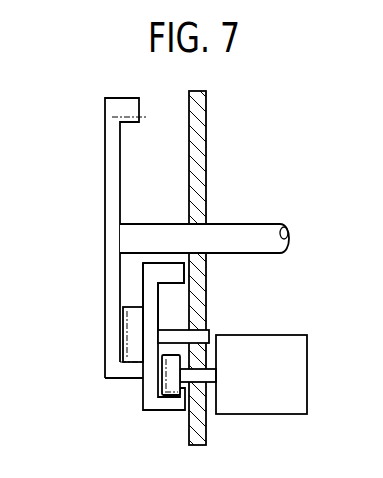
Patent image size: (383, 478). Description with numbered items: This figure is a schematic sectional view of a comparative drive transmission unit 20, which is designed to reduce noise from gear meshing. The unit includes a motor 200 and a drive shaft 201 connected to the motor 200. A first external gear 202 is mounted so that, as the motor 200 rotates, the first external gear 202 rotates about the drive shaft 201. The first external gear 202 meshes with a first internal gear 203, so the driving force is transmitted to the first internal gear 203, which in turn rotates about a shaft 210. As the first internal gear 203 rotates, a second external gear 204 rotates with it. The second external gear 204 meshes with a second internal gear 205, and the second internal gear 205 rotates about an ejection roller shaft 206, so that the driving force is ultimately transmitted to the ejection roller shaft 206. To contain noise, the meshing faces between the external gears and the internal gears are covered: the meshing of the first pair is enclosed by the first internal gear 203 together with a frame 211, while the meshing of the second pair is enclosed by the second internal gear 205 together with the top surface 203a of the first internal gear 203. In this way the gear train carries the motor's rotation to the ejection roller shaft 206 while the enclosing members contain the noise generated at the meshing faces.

The comparative drive transmission unit 20 is at (292, 110).
The motor 200 is at (290, 407).
The drive shaft 201 is at (218, 398).
The first external gear 202 is at (158, 386).
The first internal gear 203 is at (163, 405).
The top surface 203a is at (147, 292).
The second external gear 204 is at (130, 335).
The second internal gear 205 is at (112, 183).
The ejection roller shaft 206 is at (252, 232).
The shaft 210 is at (201, 328).
The frame 211 is at (202, 146).